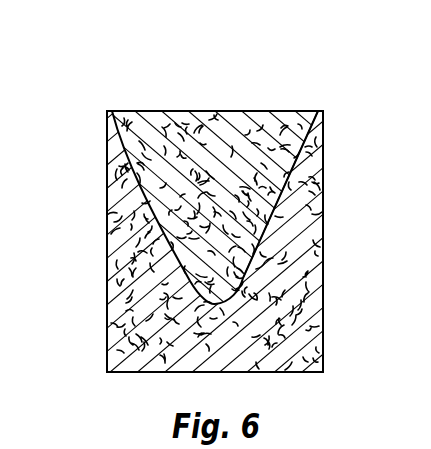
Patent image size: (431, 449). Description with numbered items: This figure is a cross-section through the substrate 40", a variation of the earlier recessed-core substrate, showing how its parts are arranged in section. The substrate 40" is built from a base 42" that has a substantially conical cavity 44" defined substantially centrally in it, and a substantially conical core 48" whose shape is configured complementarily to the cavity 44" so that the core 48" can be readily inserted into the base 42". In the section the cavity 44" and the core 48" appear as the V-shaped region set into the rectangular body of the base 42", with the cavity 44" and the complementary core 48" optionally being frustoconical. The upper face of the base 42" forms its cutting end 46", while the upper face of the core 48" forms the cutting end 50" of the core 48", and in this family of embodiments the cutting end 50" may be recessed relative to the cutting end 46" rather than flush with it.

The substrate 40 is at (80, 98).
The base 42 is at (290, 322).
The cavity 44 is at (255, 240).
The cutting end of base 46 is at (323, 133).
The core 48 is at (265, 198).
The cutting end of core 50 is at (208, 111).